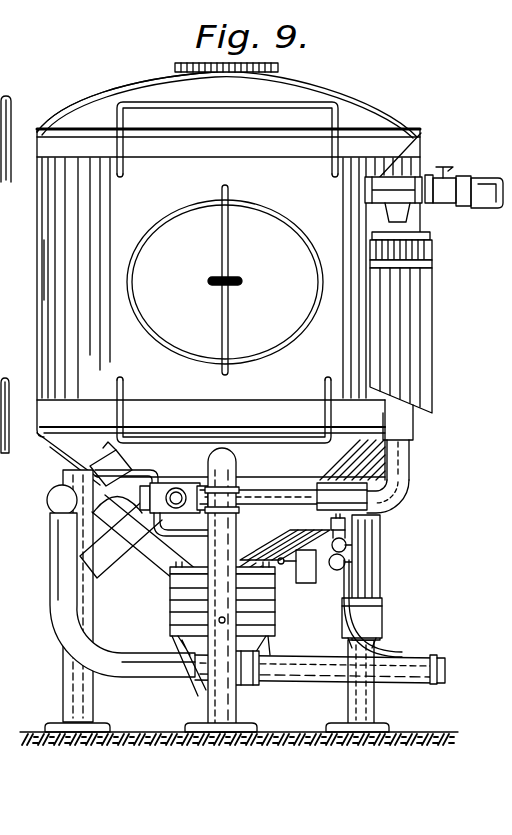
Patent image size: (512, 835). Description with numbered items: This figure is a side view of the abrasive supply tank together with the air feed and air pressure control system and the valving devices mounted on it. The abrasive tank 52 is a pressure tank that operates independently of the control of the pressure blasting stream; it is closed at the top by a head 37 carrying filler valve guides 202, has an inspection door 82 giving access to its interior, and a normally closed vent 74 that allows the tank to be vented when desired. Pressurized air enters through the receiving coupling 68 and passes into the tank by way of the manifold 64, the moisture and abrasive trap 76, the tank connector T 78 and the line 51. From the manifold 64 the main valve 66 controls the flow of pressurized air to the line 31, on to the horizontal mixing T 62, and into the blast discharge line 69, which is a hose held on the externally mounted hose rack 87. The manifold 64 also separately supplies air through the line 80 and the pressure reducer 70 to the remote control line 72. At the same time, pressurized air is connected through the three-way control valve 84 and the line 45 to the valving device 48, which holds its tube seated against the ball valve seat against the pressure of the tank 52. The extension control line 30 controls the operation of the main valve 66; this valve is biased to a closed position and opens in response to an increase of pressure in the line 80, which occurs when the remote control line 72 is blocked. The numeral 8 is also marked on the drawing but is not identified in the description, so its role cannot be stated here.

The pump discharge casing 8 is at (187, 688).
The extension control line 30 is at (213, 462).
The line 31 is at (70, 632).
The head 37 is at (132, 88).
The line 45 is at (284, 566).
The valving device 48 is at (185, 590).
The line 51 is at (374, 178).
The abrasive tank 52 is at (68, 262).
The horizontal mixing T 62 is at (259, 682).
The manifold 64 is at (277, 470).
The main valve 66 is at (100, 447).
The receiving coupling 68 is at (205, 480).
The blast discharge line 69 is at (397, 684).
The pressure reducer 70 is at (352, 535).
The remote control line 72 is at (405, 658).
The normally closed vent 74 is at (455, 202).
The moisture and abrasive trap 76 is at (413, 322).
The tank connector T 78 is at (374, 196).
The line 80 is at (281, 554).
The inspection door 82 is at (278, 320).
The 3-way control valve 84 is at (344, 619).
The hose rack 87 is at (288, 112).
The filler valve guides 202 is at (276, 58).